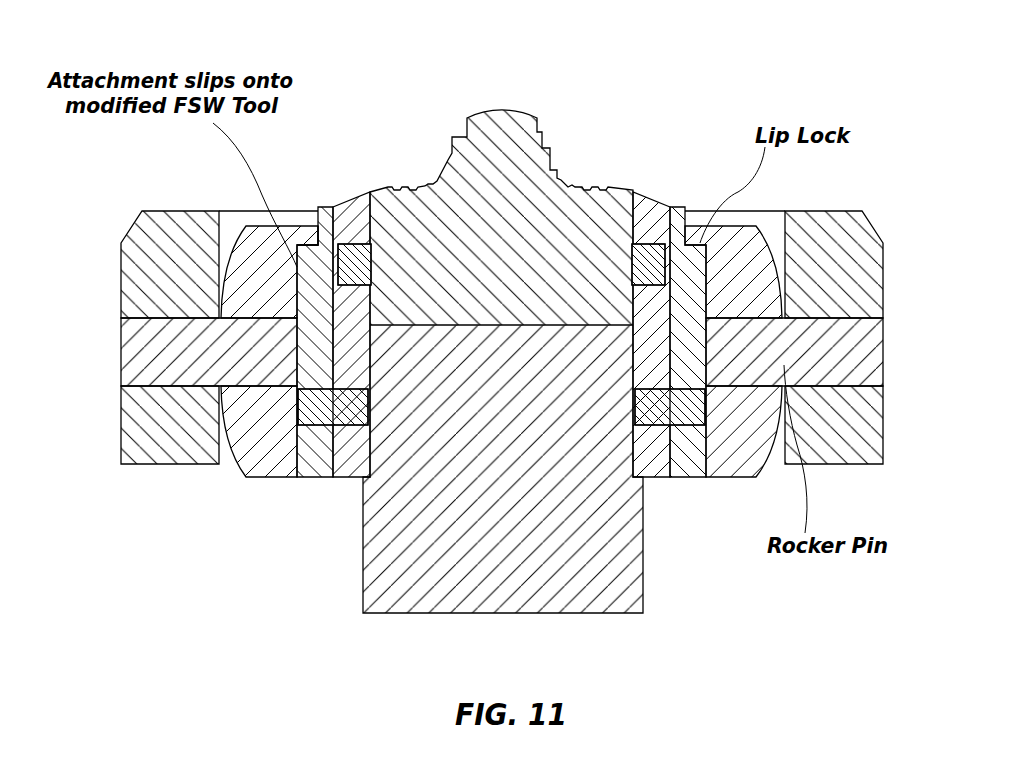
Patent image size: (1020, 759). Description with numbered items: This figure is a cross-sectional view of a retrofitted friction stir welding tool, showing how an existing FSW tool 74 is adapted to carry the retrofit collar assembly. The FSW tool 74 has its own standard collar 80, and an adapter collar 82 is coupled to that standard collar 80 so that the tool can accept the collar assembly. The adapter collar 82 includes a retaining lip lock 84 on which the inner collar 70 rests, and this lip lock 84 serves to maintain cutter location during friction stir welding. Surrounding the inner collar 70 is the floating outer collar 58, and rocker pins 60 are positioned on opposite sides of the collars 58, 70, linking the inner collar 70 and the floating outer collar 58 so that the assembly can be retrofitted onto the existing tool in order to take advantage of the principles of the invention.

The floating outer collar 58 is at (157, 240).
The rocker pins 60 is at (132, 350).
The inner collar 70 is at (254, 252).
The FSW tool 74 is at (560, 192).
The standard collar 80 is at (352, 208).
The adapter collar 82 is at (327, 214).
The lip lock 84 is at (306, 250).